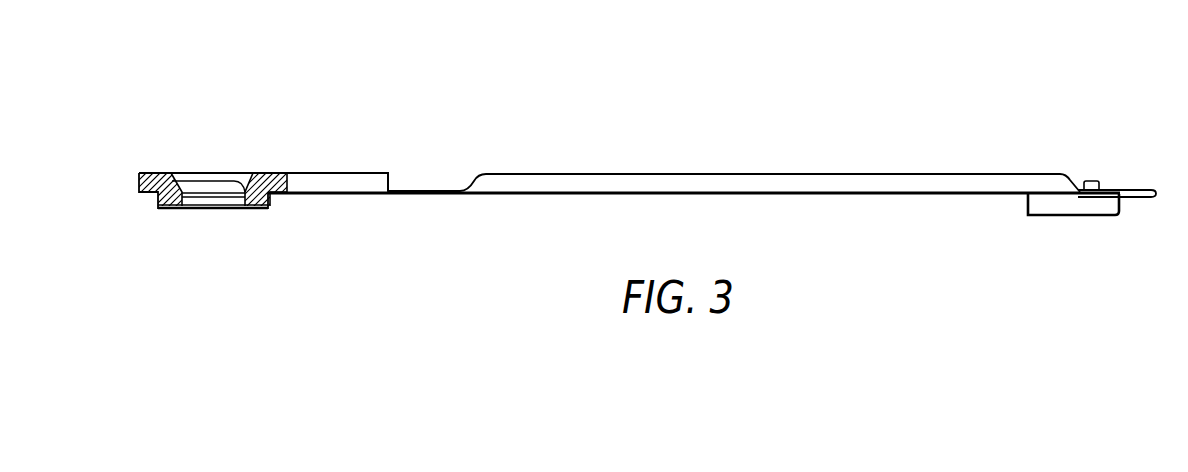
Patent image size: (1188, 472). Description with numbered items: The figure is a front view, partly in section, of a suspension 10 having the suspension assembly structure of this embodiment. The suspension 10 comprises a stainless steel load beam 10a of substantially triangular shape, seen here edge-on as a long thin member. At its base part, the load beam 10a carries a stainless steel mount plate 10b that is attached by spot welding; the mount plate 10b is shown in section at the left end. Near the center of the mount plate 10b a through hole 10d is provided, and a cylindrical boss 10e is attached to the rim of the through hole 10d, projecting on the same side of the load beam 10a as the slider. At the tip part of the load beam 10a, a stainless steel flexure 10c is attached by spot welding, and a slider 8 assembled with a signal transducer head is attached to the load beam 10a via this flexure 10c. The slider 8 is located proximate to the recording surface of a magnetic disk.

The suspension 10 is at (850, 111).
The load beam 10a is at (432, 190).
The mount plate 10b is at (337, 173).
The flexure 10c is at (1140, 190).
The through hole 10d is at (241, 185).
The cylindrical boss 10e is at (259, 210).
The slider 8 is at (1087, 220).